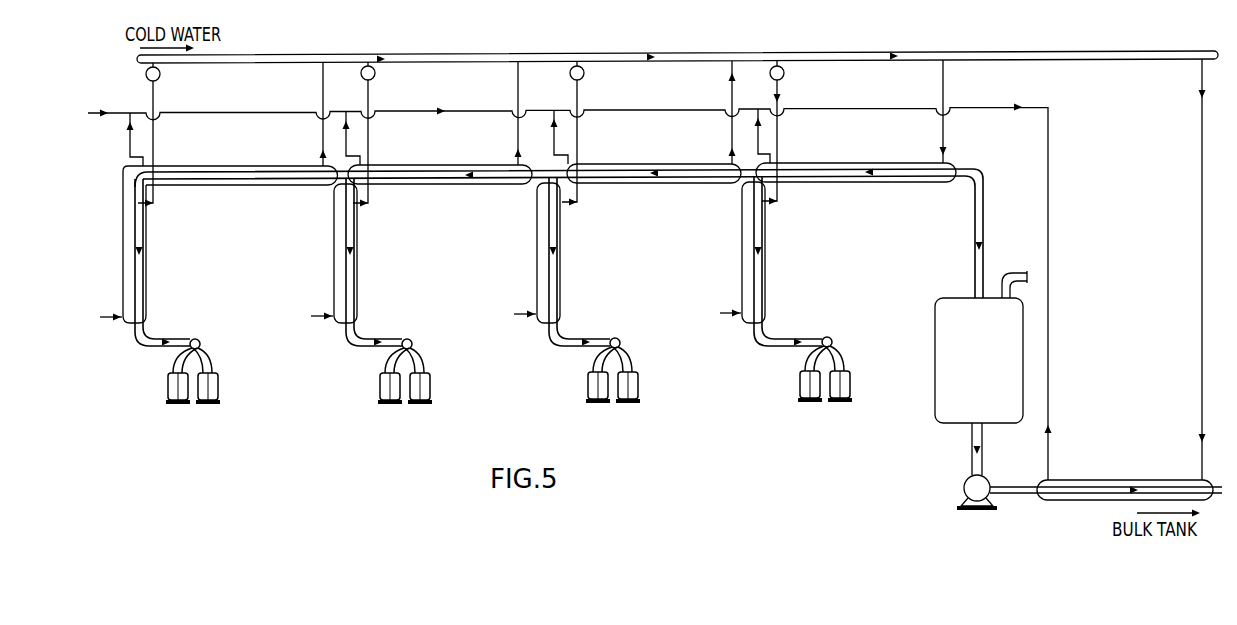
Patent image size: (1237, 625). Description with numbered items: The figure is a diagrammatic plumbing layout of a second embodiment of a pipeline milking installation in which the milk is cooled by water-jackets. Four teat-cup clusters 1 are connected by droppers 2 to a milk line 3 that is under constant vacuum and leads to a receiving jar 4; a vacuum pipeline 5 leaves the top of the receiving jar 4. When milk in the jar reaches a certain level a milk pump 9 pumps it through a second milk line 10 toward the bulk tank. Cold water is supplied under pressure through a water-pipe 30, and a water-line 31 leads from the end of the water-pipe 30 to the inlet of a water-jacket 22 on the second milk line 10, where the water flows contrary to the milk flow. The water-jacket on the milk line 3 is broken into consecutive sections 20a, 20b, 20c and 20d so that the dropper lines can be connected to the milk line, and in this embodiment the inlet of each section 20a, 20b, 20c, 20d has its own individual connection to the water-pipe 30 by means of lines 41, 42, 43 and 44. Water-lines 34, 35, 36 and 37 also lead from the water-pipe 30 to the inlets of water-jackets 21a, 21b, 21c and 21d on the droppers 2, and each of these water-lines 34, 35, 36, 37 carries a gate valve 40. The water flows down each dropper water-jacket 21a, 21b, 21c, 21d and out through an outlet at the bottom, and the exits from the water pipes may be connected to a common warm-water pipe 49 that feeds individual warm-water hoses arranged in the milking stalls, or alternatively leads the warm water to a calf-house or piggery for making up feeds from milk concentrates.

The teat-cup cluster 1 is at (201, 345).
The dropper 2 is at (152, 338).
The milk line 3 is at (214, 241).
The receiving jar 4 is at (934, 320).
The vacuum pipeline 5 is at (1004, 271).
The milk pump 9 is at (964, 487).
The second milk line 10 is at (1017, 495).
The water-jacket section 20a is at (912, 224).
The water-jacket section 20b is at (680, 224).
The water-jacket section 20c is at (482, 225).
The water-jacket section 20d is at (283, 225).
The water-jacket 21a is at (205, 275).
The water-jacket 21b is at (415, 274).
The water-jacket 21c is at (610, 275).
The water-jacket 21d is at (817, 270).
The water-jacket 22 is at (1101, 480).
The water-pipe 30 is at (797, 51).
The water-line 31 is at (1200, 257).
The water-line 34 is at (156, 150).
The water-line 35 is at (371, 148).
The water-line 36 is at (578, 146).
The water-line 37 is at (779, 140).
The gate valve 40 is at (161, 75).
The line 41 is at (944, 136).
The line 42 is at (731, 138).
The line 43 is at (517, 142).
The line 44 is at (322, 143).
The common warm-water pipe 49 is at (106, 111).